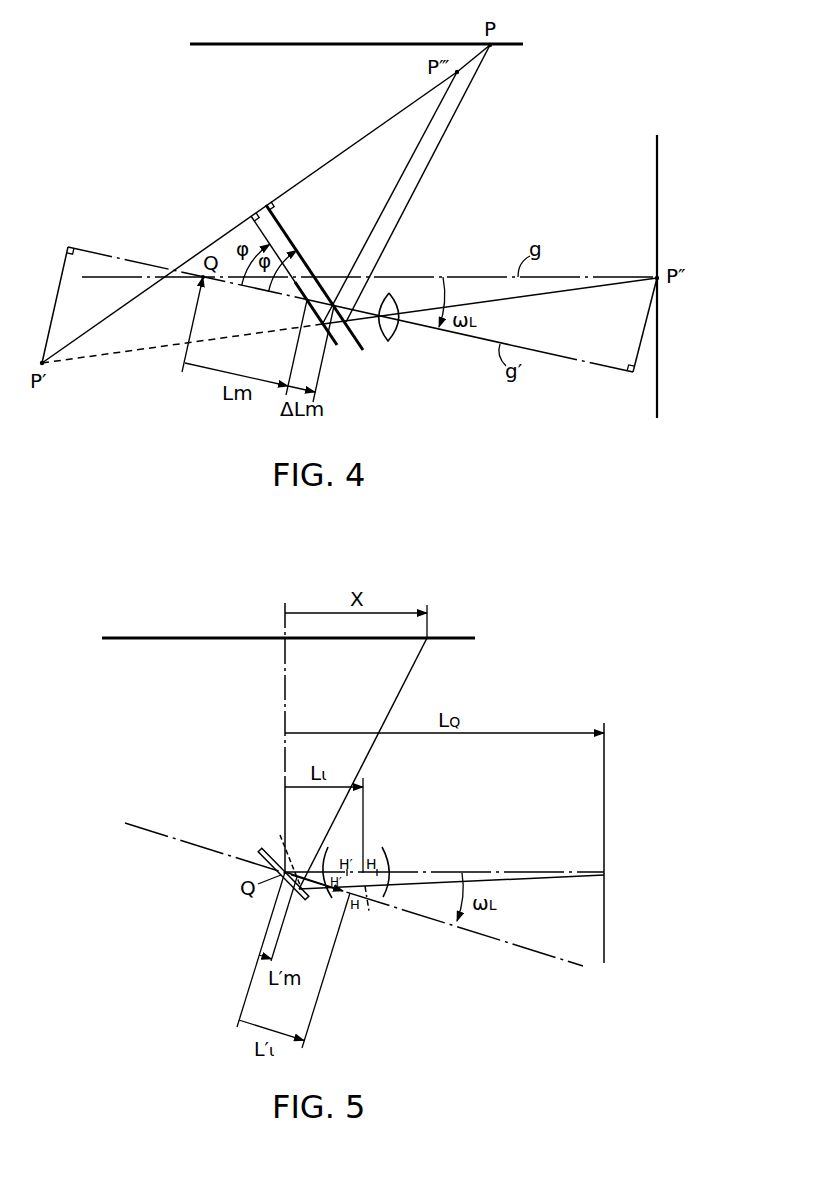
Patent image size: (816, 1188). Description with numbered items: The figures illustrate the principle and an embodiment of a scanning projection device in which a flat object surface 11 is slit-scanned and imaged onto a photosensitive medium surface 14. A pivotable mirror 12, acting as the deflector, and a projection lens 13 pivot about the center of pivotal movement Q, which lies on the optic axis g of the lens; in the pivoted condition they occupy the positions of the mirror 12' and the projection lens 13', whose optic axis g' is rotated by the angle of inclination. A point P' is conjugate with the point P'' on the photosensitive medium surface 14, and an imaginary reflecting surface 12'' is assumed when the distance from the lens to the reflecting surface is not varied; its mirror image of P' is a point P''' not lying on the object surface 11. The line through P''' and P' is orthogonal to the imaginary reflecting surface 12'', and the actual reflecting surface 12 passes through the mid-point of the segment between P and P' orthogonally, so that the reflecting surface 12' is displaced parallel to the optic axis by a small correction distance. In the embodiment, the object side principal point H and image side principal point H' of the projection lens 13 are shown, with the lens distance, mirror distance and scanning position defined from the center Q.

In FIG. 4, the object surface 11 is at (410, 44).
In FIG. 5, the object surface 11 is at (453, 638).
In FIG. 5, the pivotable mirror 12 is at (258, 851).
In FIG. 4, the pivotally moved mirror 12' is at (335, 294).
In FIG. 5, the pivotally moved mirror 12' is at (278, 848).
In FIG. 4, the imaginary reflecting surface 12'' is at (307, 300).
In FIG. 5, the projection lens 13 is at (387, 854).
In FIG. 4, the pivotally moved projection lens 13' is at (410, 328).
In FIG. 5, the pivotally moved projection lens 13' is at (364, 920).
In FIG. 4, the photosensitive medium surface 14 is at (658, 158).